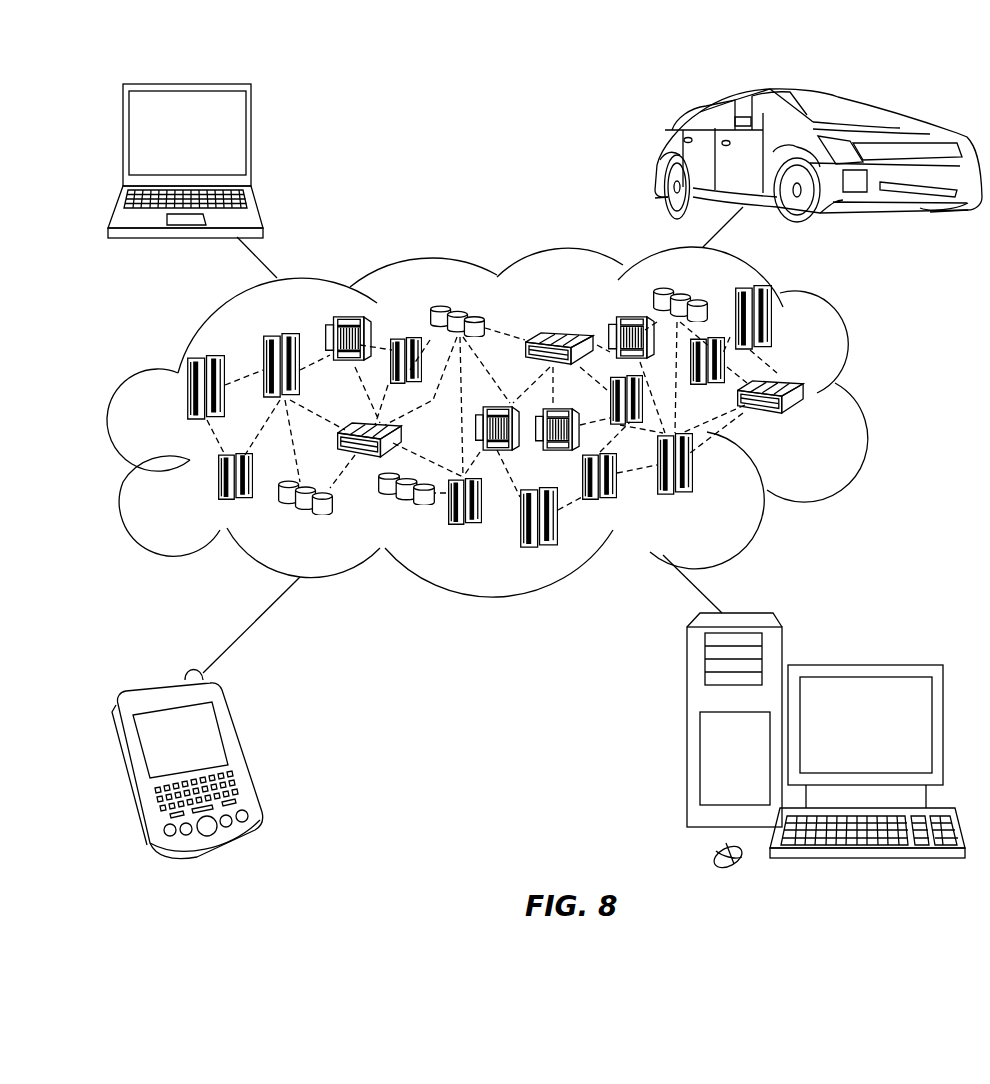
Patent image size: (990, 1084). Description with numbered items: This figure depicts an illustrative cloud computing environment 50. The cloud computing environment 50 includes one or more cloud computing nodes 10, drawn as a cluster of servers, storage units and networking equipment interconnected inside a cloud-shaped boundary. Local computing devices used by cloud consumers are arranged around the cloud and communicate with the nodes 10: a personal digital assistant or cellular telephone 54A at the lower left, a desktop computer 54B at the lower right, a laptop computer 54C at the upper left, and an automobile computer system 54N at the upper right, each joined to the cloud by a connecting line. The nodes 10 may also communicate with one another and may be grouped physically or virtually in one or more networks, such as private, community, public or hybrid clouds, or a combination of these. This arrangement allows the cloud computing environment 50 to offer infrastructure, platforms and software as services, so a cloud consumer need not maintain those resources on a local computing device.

The cloud computing node 10 is at (818, 429).
The cloud computing environment 50 is at (865, 396).
The personal digital assistant or cellular telephone 54A is at (244, 751).
The desktop computer 54B is at (864, 665).
The laptop computer 54C is at (250, 141).
The automobile computer system 54N is at (661, 158).